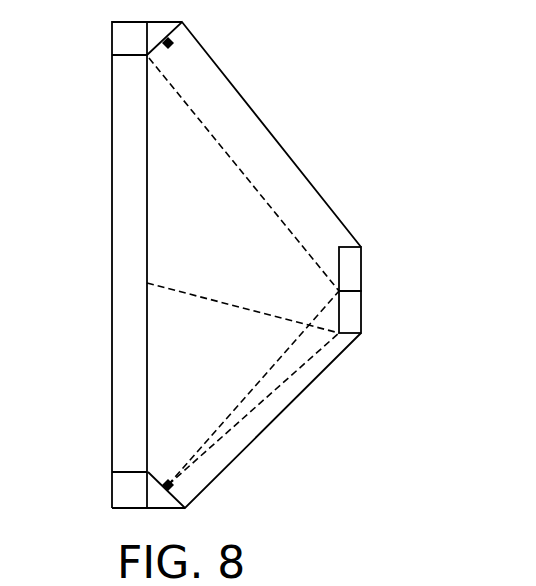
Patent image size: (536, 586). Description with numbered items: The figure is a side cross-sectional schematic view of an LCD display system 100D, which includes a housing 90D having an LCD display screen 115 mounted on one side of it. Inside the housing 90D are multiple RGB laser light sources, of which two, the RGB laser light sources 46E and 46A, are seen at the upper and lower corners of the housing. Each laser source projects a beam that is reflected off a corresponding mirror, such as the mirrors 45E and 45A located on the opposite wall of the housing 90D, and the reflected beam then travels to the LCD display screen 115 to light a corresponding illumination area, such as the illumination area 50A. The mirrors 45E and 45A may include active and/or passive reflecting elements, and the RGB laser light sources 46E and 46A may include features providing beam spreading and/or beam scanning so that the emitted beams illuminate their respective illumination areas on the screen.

The LCD display system 100D is at (330, 67).
The LCD display screen 115 is at (84, 265).
The illumination area 50A is at (111, 265).
The housing 90D is at (274, 137).
The mirror 45E is at (361, 267).
The mirror 45A is at (361, 310).
The RGB laser light source 46E is at (217, 35).
The RGB laser light source 46A is at (217, 497).